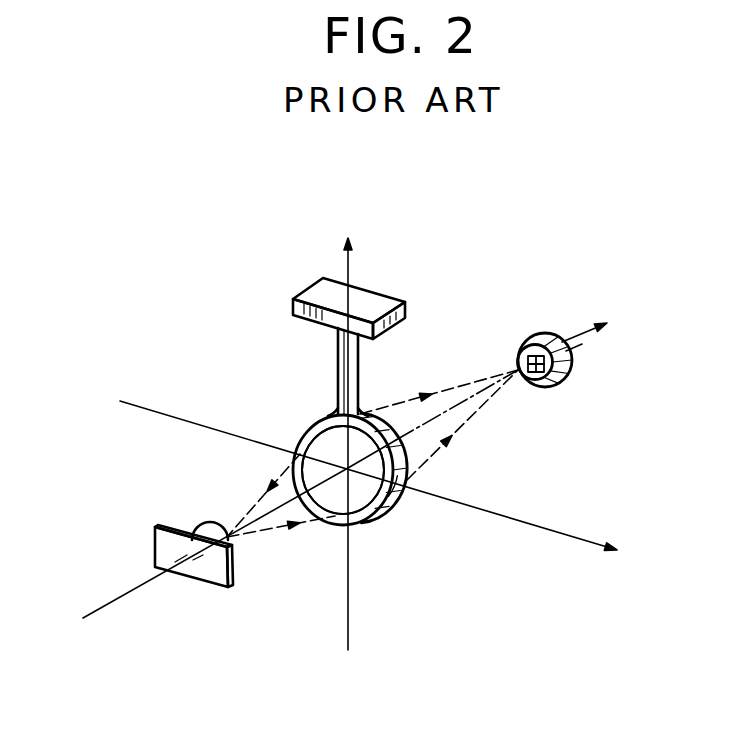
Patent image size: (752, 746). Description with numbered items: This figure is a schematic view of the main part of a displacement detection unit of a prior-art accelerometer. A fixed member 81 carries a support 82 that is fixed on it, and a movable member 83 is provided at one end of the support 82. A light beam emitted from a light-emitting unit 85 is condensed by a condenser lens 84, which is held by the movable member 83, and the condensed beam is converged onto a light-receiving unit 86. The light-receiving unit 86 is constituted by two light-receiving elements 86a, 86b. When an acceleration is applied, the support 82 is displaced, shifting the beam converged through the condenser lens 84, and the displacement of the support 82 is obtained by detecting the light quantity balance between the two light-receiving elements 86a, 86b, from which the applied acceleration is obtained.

The fixed member 81 is at (368, 302).
The support 82 is at (337, 367).
The movable member 83 is at (400, 505).
The condenser lens 84 is at (357, 502).
The light-emitting unit 85 is at (212, 577).
The light-receiving unit 86 is at (601, 307).
The light-receiving element 86a is at (523, 345).
The light-receiving element 86b is at (543, 350).